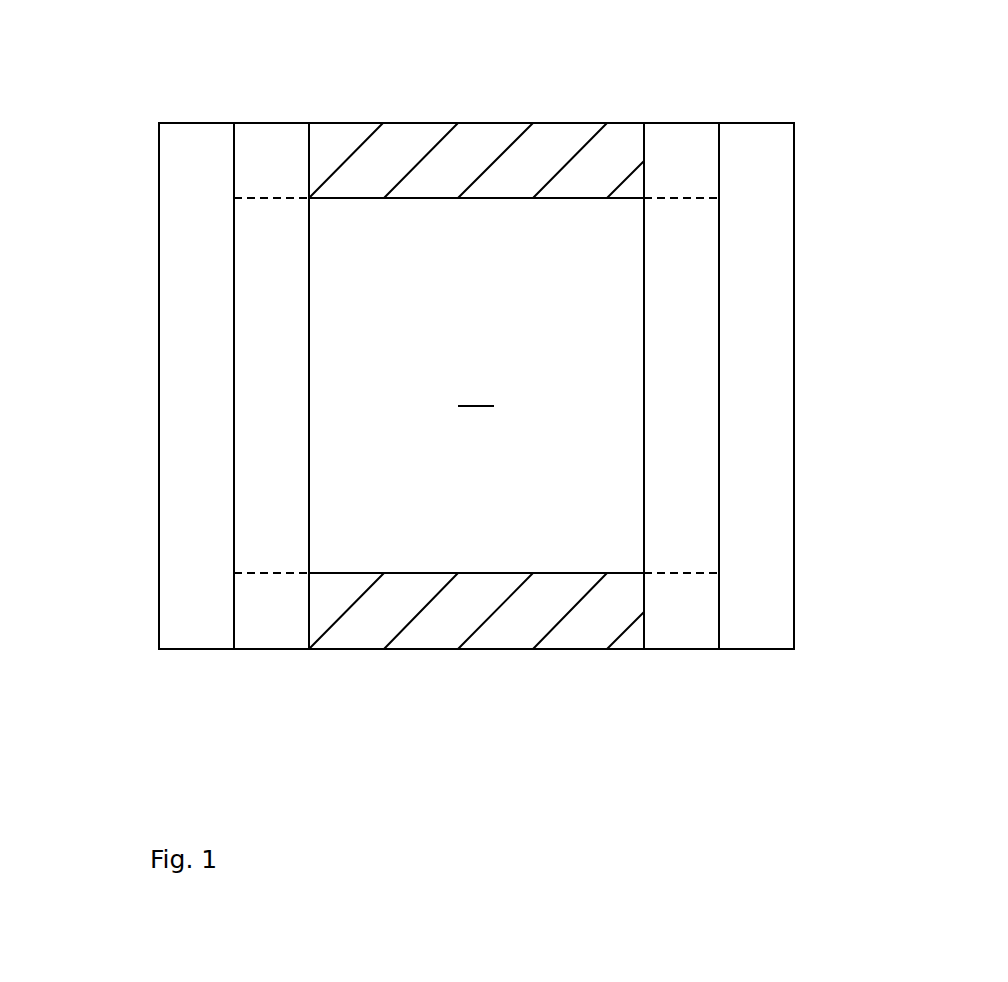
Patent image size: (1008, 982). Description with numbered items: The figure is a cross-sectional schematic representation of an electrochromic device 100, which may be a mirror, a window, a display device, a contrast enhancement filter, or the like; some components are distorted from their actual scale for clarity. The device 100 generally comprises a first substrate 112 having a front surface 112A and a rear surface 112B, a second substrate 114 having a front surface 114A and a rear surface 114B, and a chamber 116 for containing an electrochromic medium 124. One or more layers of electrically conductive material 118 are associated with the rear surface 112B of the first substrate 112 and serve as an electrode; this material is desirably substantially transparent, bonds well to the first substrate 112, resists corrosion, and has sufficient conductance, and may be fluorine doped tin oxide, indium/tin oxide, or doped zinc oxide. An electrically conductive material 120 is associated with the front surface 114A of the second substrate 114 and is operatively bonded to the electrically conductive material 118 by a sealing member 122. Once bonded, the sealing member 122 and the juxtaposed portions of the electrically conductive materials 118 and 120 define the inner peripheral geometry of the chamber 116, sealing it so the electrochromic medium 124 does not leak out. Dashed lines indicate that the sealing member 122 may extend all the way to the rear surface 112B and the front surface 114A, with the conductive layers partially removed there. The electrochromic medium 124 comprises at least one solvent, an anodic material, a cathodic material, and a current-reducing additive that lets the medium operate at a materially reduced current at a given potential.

The electrochromic device 100 is at (517, 85).
The first substrate 112 is at (755, 652).
The front surface 112A is at (794, 548).
The rear surface 112B is at (719, 294).
The second substrate 114 is at (193, 652).
The front surface 114A is at (234, 293).
The rear surface 114B is at (159, 547).
The chamber 116 is at (477, 395).
The electrically conductive material 118 is at (680, 540).
The electrically conductive material 120 is at (268, 538).
The sealing member 122 is at (347, 140).
The electrochromic medium 124 is at (531, 502).